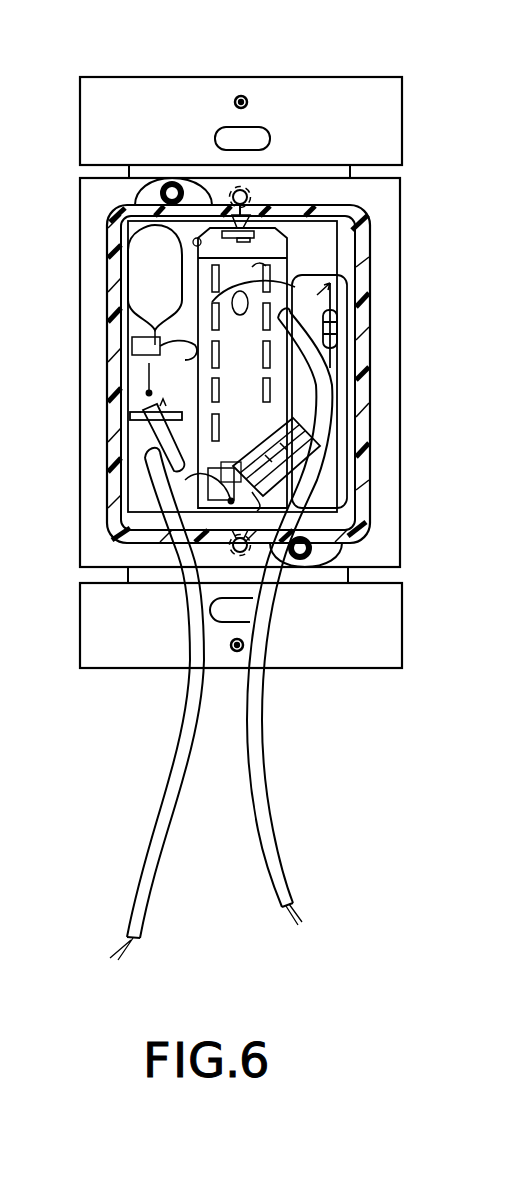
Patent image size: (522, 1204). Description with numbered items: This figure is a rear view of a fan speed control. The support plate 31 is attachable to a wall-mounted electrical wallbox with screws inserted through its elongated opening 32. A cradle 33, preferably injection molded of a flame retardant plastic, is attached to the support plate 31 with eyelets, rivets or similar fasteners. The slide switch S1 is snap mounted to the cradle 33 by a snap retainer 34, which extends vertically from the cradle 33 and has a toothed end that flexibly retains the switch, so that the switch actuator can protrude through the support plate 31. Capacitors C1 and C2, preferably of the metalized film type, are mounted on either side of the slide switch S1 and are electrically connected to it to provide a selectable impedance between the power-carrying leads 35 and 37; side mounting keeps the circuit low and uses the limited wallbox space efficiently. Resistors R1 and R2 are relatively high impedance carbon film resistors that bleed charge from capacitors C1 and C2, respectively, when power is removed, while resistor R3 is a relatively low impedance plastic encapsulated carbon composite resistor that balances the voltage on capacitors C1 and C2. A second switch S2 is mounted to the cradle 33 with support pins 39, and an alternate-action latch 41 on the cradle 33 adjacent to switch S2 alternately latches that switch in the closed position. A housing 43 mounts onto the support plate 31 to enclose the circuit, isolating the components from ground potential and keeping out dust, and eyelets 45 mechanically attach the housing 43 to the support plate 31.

The support plate 31 is at (213, 77).
The elongated opening 32 is at (270, 133).
The cradle 33 is at (355, 232).
The snap retainer 34 is at (272, 238).
The power-carrying lead 35 is at (158, 827).
The power-carrying lead 37 is at (273, 827).
The support pins 39 is at (110, 380).
The alternate-action latch 41 is at (231, 501).
The housing 43 is at (373, 513).
The eyelets 45 is at (313, 550).
The capacitor C1 is at (128, 230).
The capacitor C2 is at (340, 268).
The resistor R1 is at (180, 363).
The resistor R2 is at (338, 333).
The resistor R3 is at (297, 462).
The slide switch S1 is at (295, 287).
The switch S2 is at (135, 453).